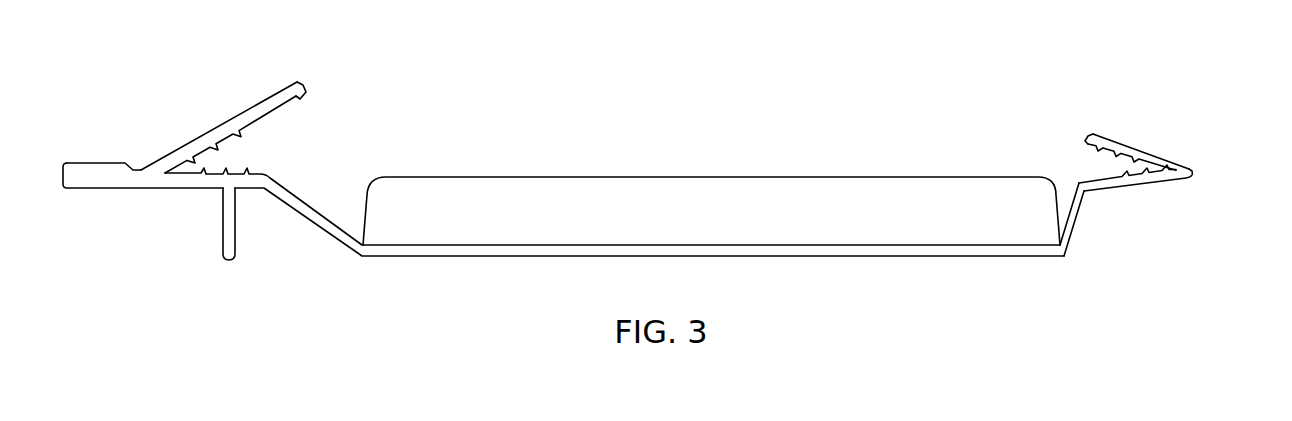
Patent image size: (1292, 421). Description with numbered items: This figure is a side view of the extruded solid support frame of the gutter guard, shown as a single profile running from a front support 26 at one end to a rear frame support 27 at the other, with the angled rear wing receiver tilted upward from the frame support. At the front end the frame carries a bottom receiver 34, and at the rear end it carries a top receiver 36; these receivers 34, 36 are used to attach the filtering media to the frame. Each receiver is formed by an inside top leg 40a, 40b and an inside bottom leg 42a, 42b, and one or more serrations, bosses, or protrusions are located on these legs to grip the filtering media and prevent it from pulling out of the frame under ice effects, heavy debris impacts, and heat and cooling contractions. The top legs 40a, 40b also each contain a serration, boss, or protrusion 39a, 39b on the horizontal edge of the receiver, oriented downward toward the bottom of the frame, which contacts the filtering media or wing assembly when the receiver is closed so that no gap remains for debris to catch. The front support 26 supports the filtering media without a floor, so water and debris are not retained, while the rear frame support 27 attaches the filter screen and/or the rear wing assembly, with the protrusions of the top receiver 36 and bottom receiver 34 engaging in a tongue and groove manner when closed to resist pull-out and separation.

The front support 26 is at (97, 163).
The rear frame support 27 is at (1183, 160).
The bottom receiver 34 is at (550, 157).
The top receiver 36 is at (1147, 171).
The serration, boss, or protrusion 39a is at (303, 97).
The serration, boss, or protrusion 39b is at (1088, 146).
The inside top leg 40a is at (264, 95).
The inside top leg 40b is at (1099, 115).
The inside bottom leg 42a is at (253, 190).
The inside bottom leg 42b is at (1100, 192).